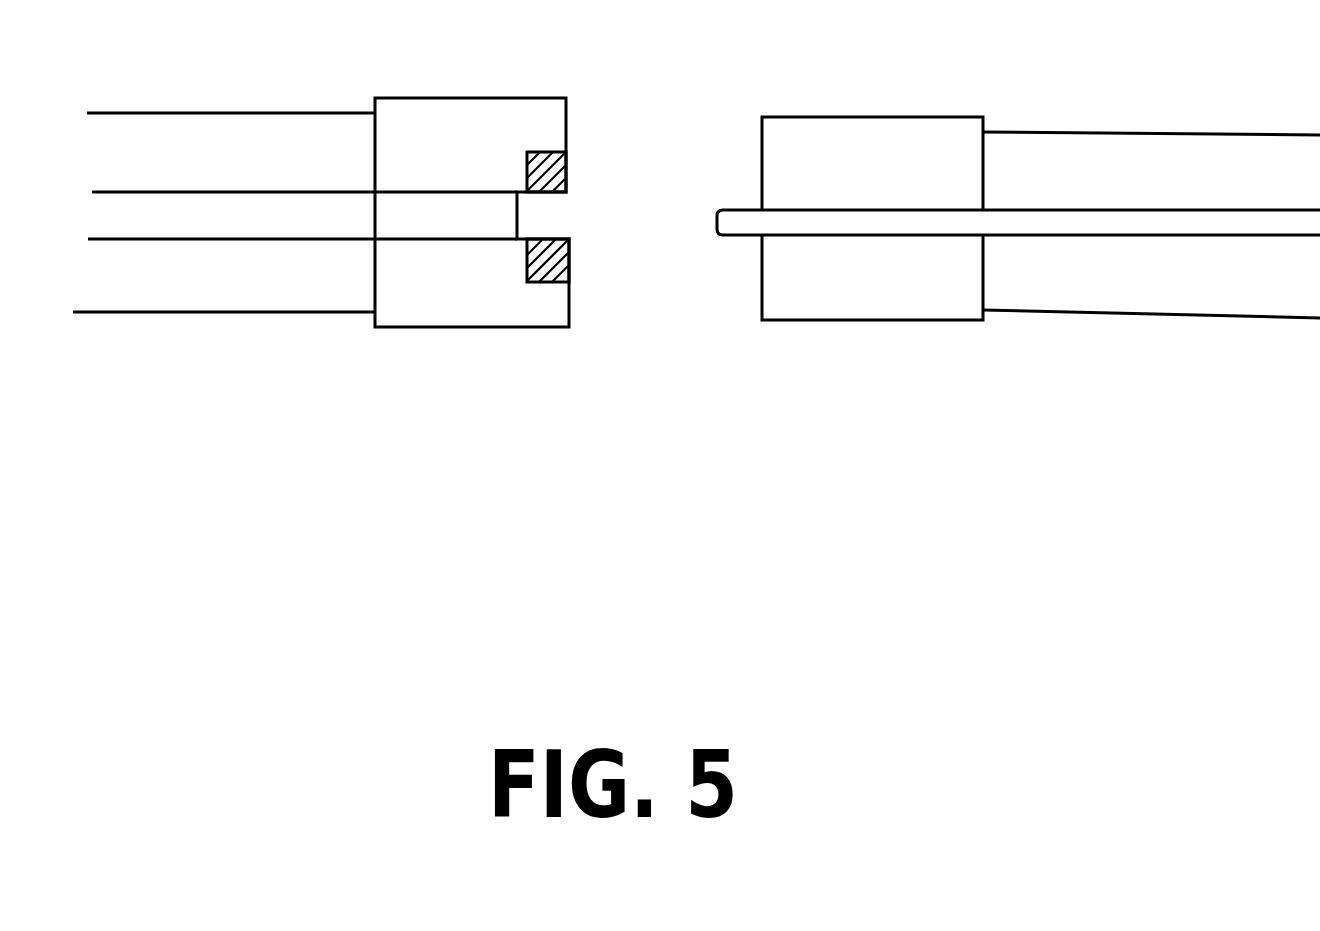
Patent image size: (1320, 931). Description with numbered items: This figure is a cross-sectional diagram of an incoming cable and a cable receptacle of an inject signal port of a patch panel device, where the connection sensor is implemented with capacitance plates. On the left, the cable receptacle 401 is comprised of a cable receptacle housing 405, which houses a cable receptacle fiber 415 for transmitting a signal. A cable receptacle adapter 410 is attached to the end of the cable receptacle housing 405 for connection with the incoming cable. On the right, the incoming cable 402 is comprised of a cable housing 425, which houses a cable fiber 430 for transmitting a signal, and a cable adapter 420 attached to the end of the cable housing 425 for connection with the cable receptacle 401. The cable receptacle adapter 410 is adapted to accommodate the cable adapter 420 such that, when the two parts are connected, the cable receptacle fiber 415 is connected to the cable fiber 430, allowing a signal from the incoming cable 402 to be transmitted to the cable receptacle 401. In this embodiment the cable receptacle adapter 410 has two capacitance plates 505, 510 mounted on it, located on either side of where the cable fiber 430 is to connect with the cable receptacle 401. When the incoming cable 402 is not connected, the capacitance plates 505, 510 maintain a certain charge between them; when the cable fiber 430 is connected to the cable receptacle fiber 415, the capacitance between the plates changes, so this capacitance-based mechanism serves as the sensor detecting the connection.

The cable receptacle 401 is at (361, 250).
The incoming cable 402 is at (1003, 270).
The cable receptacle housing 405 is at (242, 126).
The cable receptacle adapter 410 is at (447, 112).
The cable receptacle fiber 415 is at (157, 206).
The cable adapter 420 is at (868, 122).
The cable housing 425 is at (1115, 143).
The cable fiber 430 is at (743, 218).
The capacitance plate 505 is at (566, 166).
The capacitance plate 510 is at (566, 258).